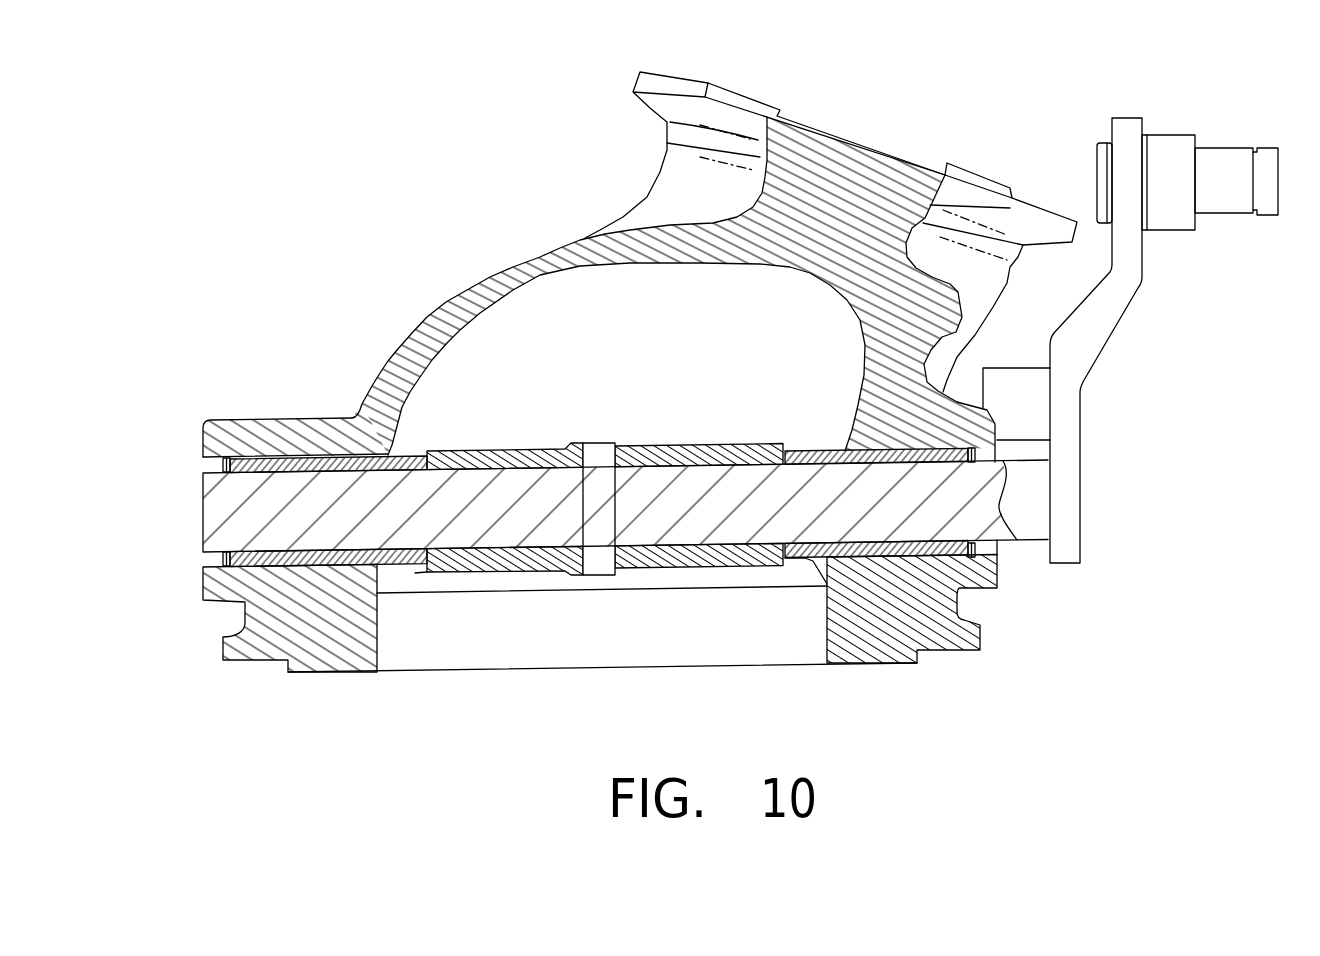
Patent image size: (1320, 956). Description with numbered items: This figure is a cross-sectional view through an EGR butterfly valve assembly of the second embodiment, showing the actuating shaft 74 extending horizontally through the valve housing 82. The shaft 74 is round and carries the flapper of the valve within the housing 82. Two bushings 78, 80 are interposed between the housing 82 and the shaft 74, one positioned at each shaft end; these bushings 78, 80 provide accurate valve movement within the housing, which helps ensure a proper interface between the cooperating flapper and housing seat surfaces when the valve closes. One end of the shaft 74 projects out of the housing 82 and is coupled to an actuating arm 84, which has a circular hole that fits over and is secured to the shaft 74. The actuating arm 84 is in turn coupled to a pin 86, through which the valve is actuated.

The actuating shaft 74 is at (1027, 503).
The bushing 78 is at (308, 460).
The bushing 80 is at (903, 557).
The housing 82 is at (330, 645).
The actuating arm 84 is at (1143, 280).
The pin 86 is at (1238, 153).